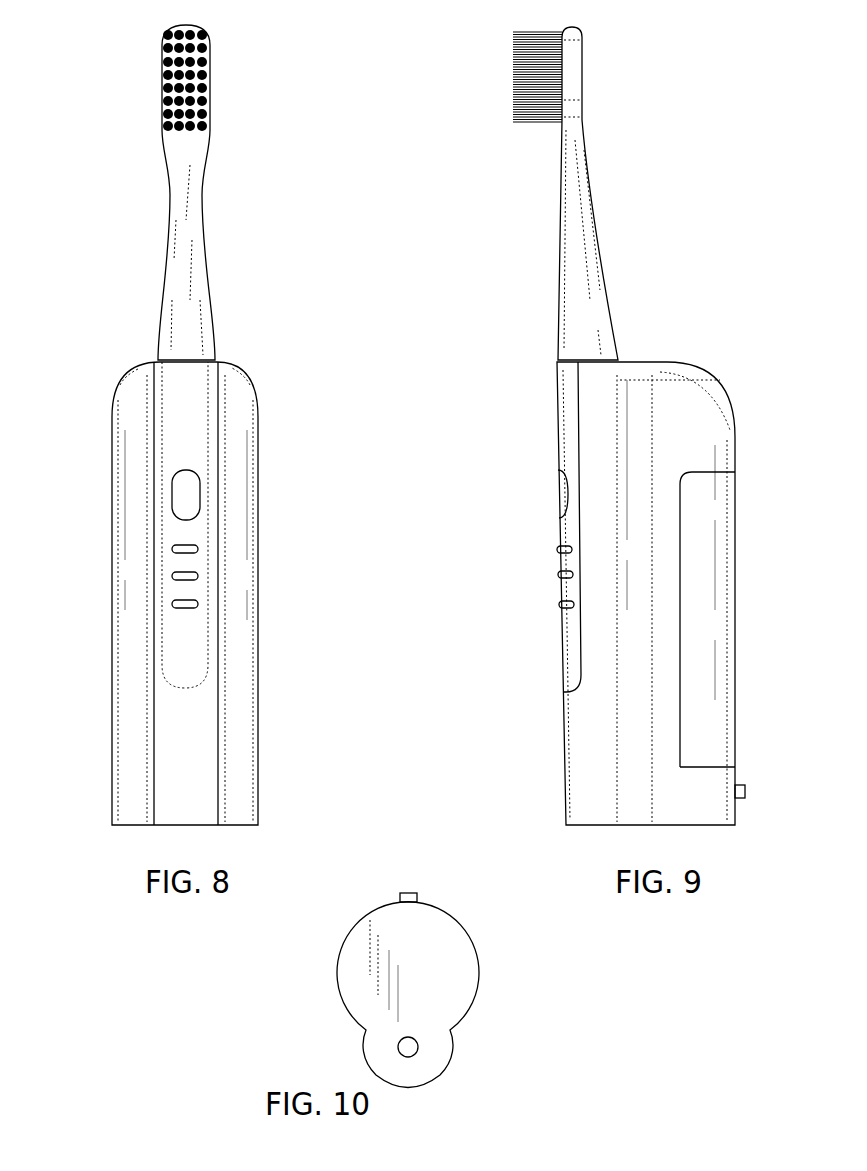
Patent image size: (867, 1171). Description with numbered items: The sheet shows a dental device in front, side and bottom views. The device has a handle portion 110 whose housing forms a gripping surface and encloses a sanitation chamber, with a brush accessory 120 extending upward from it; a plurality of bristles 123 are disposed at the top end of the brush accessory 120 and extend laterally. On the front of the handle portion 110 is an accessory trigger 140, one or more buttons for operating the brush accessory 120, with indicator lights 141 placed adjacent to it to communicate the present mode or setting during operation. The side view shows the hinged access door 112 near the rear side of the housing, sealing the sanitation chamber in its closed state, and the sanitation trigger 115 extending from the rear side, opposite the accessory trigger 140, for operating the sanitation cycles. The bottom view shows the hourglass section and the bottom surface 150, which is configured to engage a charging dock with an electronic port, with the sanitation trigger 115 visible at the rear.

In FIG. 8, the handle portion 110 is at (112, 512).
In FIG. 9, the handle portion 110 is at (587, 763).
In FIG. 9, the hinged access door 112 is at (722, 607).
In FIG. 9, the sanitation trigger 115 is at (745, 793).
In FIG. 10, the sanitation trigger 115 is at (408, 893).
In FIG. 8, the brush accessory 120 is at (207, 243).
In FIG. 9, the brush accessory 120 is at (602, 240).
In FIG. 8, the bristles 123 is at (208, 75).
In FIG. 9, the bristles 123 is at (513, 75).
In FIG. 8, the accessory trigger 140 is at (195, 497).
In FIG. 9, the accessory trigger 140 is at (560, 500).
In FIG. 8, the indicator lights 141 is at (197, 577).
In FIG. 9, the indicator lights 141 is at (562, 605).
In FIG. 10, the bottom surface 150 is at (470, 955).